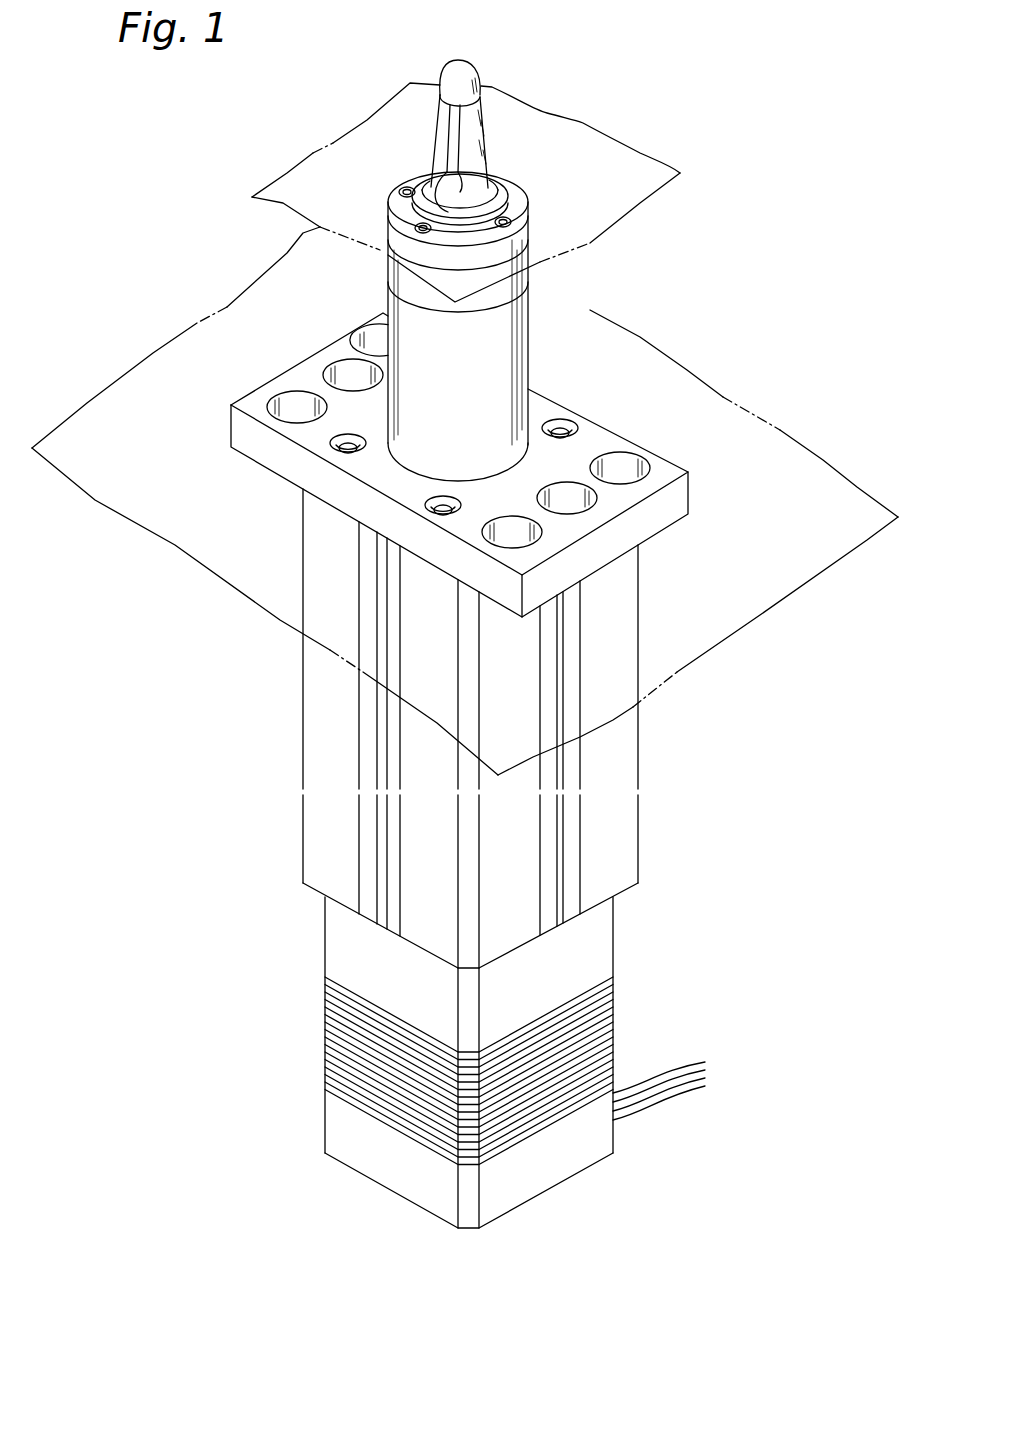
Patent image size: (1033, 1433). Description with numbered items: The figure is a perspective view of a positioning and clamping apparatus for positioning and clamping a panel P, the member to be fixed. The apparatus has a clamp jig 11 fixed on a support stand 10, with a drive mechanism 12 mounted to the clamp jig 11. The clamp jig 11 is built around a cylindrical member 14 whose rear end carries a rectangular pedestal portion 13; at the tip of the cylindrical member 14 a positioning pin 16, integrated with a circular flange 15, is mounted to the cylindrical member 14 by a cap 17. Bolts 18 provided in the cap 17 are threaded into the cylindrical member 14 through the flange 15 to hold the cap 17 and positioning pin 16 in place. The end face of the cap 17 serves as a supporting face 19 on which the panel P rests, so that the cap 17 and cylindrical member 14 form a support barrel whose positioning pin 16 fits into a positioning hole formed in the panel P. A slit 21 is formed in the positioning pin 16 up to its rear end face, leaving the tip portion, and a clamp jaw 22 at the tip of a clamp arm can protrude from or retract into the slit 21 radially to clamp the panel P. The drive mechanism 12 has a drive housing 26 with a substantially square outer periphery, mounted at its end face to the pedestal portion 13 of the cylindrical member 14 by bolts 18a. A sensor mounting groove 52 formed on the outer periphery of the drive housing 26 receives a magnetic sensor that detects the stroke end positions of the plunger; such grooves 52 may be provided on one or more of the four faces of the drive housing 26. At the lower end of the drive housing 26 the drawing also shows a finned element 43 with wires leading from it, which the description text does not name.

The panel P is at (650, 163).
The support stand 10 is at (527, 644).
The clamp jig 11 is at (483, 270).
The drive mechanism 12 is at (484, 728).
The rectangular pedestal portion 13 is at (663, 470).
The cylindrical member 14 is at (493, 358).
The circular flange 15 is at (530, 252).
The positioning pin 16 is at (446, 136).
The cap 17 is at (512, 197).
The bolts 18 is at (395, 188).
The bolts 18a is at (562, 425).
The supporting face 19 is at (497, 170).
The slit 21 is at (452, 132).
The clamp jaw 22 is at (448, 168).
The drive housing 26 is at (327, 782).
The motor 43 is at (590, 950).
The sensor mounting groove 52 is at (390, 880).